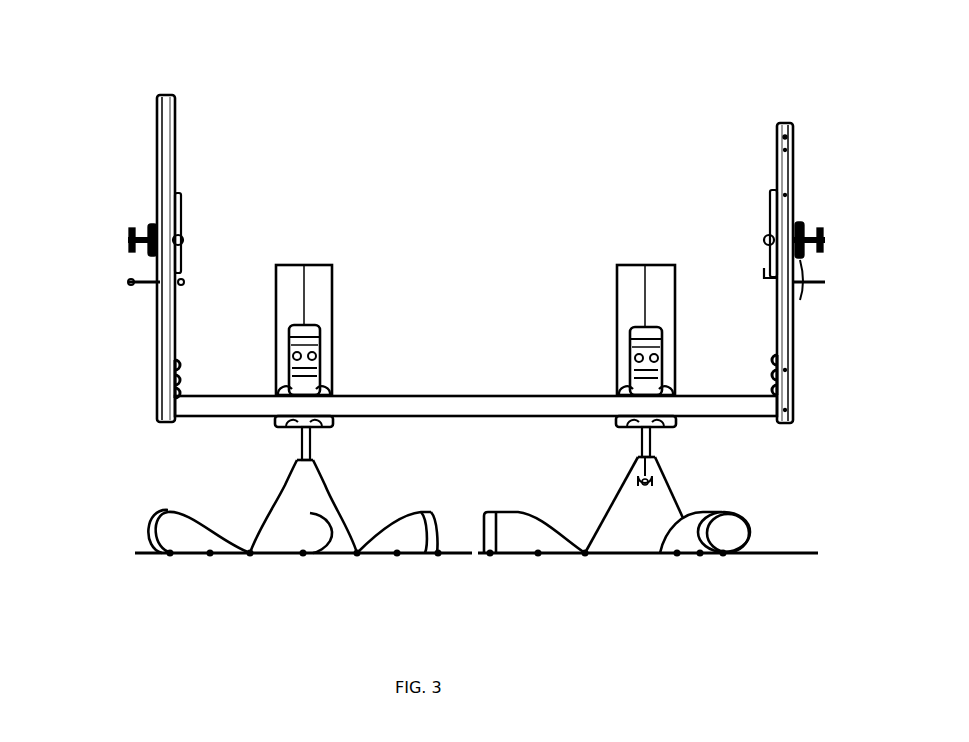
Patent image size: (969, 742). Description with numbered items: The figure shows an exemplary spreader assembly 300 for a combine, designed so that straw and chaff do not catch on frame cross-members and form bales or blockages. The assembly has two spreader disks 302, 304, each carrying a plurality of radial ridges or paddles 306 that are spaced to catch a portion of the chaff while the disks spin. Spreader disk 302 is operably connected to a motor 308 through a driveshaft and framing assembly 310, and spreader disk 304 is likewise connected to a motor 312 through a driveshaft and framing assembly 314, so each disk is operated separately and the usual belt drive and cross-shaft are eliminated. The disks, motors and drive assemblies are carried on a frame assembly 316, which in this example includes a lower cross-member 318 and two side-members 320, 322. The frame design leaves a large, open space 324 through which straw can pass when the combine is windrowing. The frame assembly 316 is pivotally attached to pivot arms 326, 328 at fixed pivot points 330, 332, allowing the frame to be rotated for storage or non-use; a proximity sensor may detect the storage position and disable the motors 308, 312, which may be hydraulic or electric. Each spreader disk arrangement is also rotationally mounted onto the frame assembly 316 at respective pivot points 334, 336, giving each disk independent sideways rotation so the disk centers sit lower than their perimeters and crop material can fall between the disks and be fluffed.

The spreader assembly 300 is at (139, 61).
The spreader disk 302 is at (192, 562).
The spreader disk 304 is at (782, 556).
The radial ridges or paddles 306 is at (310, 538).
The motor 308 is at (322, 270).
The driveshaft and framing assembly 310 is at (313, 443).
The motor 312 is at (625, 272).
The driveshaft and framing assembly 314 is at (641, 440).
The frame assembly 316 is at (122, 380).
The lower cross-member 318 is at (460, 400).
The side-member 320 is at (157, 352).
The side-member 322 is at (795, 360).
The open space 324 is at (508, 170).
The pivot arm 326 is at (158, 160).
The pivot arm 328 is at (797, 168).
The fixed pivot point 330 is at (187, 246).
The fixed pivot point 332 is at (765, 246).
The pivot point 334 is at (320, 378).
The pivot point 336 is at (630, 385).